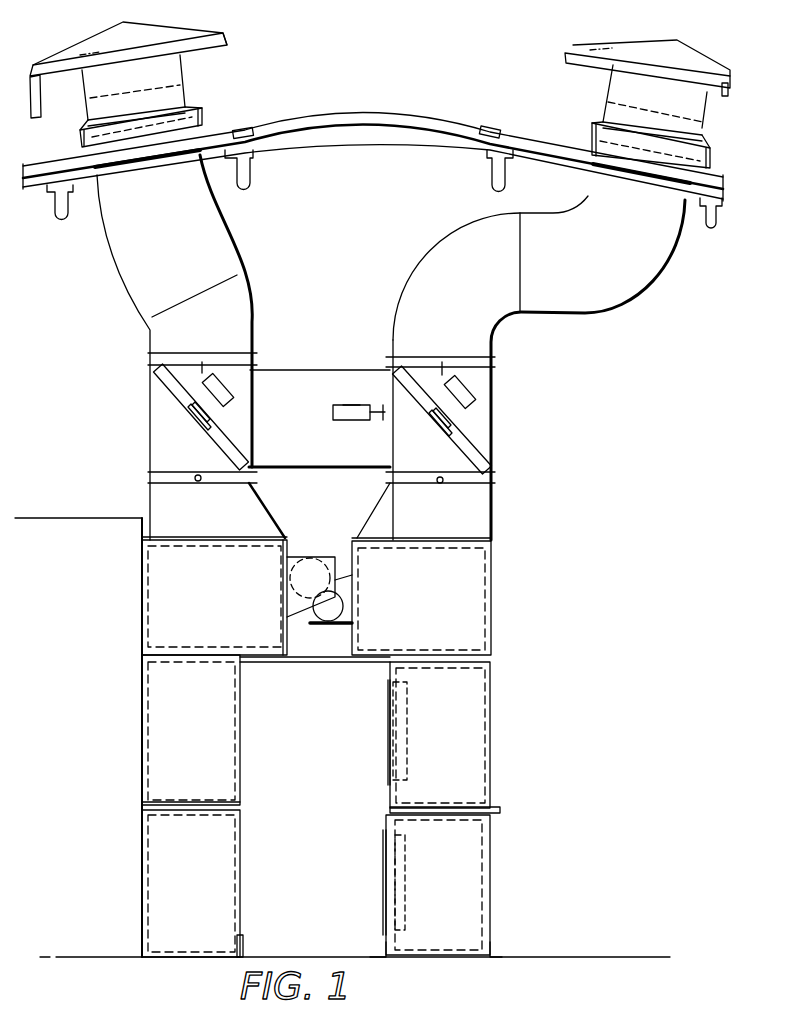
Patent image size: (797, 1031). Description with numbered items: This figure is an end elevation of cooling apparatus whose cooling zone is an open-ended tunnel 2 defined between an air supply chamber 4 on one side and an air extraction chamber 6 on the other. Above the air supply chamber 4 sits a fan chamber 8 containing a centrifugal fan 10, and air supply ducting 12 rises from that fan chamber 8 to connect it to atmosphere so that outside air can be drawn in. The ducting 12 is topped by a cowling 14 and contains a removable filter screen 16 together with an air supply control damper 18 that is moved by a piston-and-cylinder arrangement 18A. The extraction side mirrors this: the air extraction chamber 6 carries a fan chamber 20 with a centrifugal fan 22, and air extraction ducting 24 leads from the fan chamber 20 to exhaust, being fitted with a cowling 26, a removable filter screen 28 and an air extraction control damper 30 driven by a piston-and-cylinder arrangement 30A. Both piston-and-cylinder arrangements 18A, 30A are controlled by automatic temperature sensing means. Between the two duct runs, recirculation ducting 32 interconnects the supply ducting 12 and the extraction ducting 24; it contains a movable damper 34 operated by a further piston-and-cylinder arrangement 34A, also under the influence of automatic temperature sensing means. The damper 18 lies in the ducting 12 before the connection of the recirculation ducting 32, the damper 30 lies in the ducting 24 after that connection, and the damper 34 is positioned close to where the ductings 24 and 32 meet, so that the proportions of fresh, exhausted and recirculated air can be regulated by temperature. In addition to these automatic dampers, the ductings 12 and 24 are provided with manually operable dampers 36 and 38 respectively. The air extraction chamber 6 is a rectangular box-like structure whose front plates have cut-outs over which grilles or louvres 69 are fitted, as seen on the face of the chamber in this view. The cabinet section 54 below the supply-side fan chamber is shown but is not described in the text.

The open-ended tunnel 2 is at (118, 748).
The air supply chamber 4 is at (156, 853).
The air extraction chamber 6 is at (465, 878).
The fan chamber 8 is at (162, 586).
The centrifugal fan 10 is at (290, 560).
The air supply ducting 12 is at (150, 330).
The cowling 14 is at (185, 72).
The removable filter screen 16 is at (150, 382).
The air supply control damper 18 is at (230, 358).
The piston-and-cylinder arrangement 18A is at (232, 394).
The fan chamber 20 is at (478, 587).
The centrifugal fan 22 is at (340, 625).
The air extraction ducting 24 is at (565, 222).
The cowling 26 is at (610, 80).
The removable filter screen 28 is at (467, 450).
The air extraction control damper 30 is at (470, 359).
The piston-and-cylinder arrangement 30A is at (480, 407).
The recirculation ducting 32 is at (318, 390).
The movable damper 34 is at (383, 450).
The piston-and-cylinder arrangement 34A is at (343, 405).
The manually operable damper 36 is at (165, 475).
The manually operable damper 38 is at (467, 482).
The middle left cabinet 54 is at (240, 722).
The grilles or louvres 69 is at (390, 732).